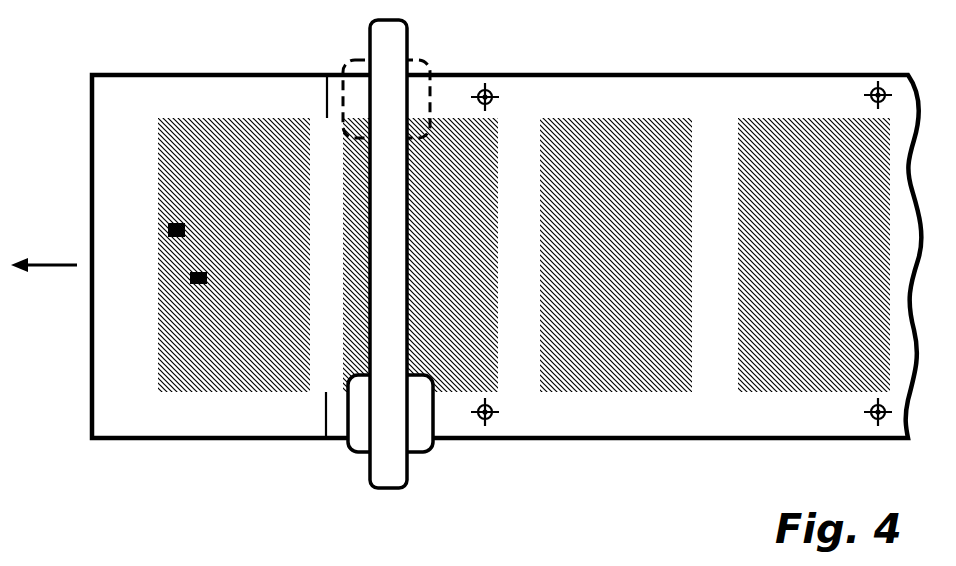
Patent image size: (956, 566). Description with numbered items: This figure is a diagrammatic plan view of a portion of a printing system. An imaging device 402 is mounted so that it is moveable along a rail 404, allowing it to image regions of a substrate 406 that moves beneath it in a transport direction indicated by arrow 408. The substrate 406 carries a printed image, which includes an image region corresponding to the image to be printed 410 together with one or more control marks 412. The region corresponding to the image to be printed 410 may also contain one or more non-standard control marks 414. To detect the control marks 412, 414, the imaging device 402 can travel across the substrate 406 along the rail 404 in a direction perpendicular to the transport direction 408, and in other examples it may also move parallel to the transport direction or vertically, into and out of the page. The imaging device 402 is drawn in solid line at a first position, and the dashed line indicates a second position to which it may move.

The imaging device 402 is at (418, 454).
The rail 404 is at (408, 52).
The substrate 406 is at (92, 343).
The arrow indicating transport direction 408 is at (58, 263).
The image region corresponding to the image to be printed 410 is at (205, 375).
The control marks 412 is at (323, 78).
The non-standard control marks 414 is at (170, 232).